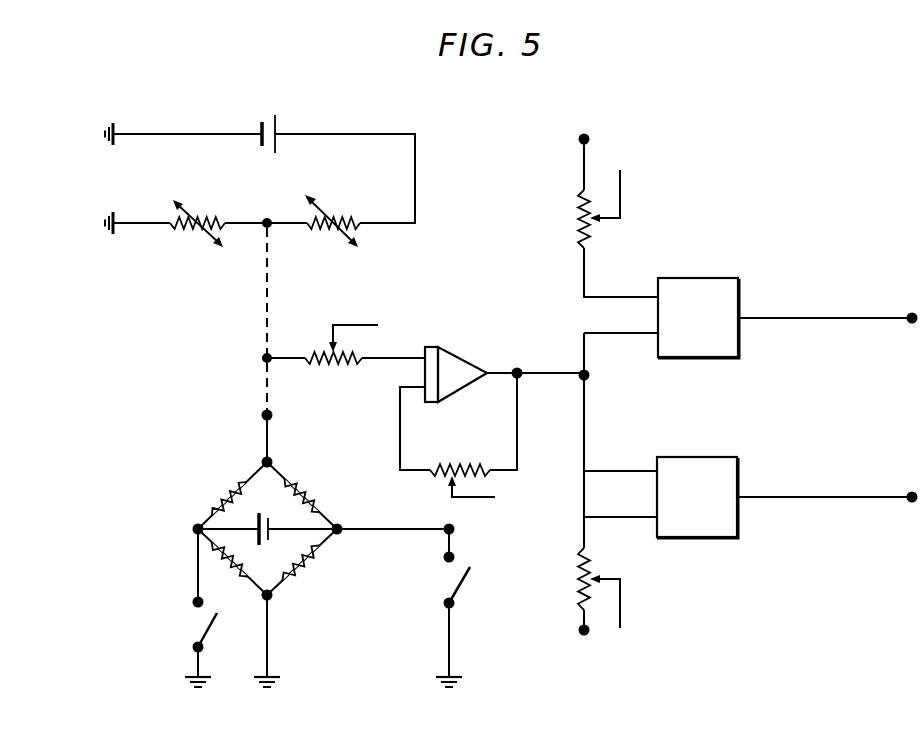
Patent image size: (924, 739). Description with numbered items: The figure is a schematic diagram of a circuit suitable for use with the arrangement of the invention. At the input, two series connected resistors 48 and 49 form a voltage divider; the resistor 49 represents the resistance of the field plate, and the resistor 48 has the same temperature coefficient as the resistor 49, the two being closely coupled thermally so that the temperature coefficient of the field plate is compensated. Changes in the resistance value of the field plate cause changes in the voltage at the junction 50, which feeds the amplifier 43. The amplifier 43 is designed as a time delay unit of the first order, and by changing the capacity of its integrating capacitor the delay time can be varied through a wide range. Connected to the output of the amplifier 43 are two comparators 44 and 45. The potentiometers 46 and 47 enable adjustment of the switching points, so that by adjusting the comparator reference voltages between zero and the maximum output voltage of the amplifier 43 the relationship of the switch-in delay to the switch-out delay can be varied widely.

The amplifier 43 is at (468, 362).
The comparator 44 is at (704, 349).
The comparator 45 is at (707, 528).
The potentiometer 46 is at (578, 215).
The potentiometer 47 is at (576, 585).
The resistor 48 is at (332, 235).
The resistor 49 is at (197, 235).
The junction 50 is at (261, 358).